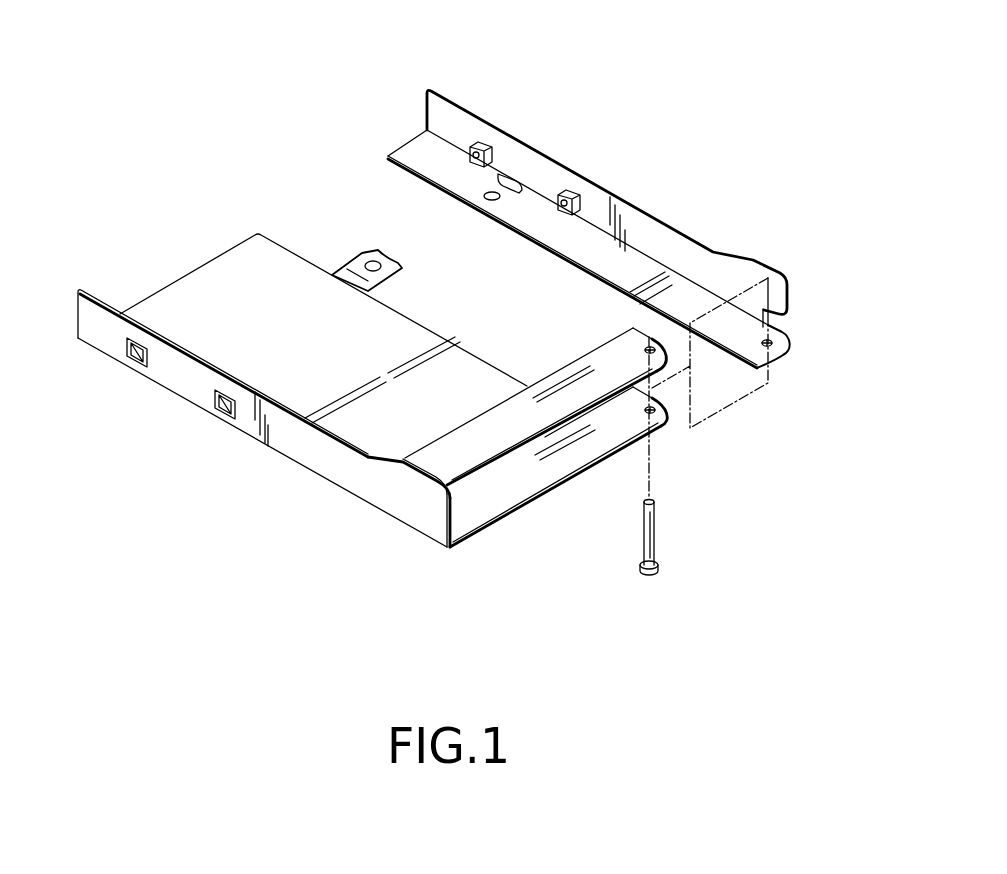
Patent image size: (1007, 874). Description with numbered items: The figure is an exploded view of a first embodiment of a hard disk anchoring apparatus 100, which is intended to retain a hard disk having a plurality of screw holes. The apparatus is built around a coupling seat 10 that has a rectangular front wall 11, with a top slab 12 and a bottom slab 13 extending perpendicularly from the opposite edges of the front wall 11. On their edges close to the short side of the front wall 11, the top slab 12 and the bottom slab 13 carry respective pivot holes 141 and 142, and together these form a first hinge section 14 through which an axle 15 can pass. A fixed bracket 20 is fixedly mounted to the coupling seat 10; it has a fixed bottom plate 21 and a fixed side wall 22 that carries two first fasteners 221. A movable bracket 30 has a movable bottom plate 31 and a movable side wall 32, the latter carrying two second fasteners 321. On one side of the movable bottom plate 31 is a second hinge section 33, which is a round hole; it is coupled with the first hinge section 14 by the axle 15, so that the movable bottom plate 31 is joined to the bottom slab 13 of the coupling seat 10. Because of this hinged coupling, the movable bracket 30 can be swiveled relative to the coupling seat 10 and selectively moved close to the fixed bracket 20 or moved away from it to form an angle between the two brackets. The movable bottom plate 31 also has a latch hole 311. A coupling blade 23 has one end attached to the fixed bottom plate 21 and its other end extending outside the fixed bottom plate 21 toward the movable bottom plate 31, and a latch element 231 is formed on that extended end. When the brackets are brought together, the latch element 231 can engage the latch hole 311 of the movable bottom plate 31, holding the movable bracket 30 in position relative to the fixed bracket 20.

The hard disk anchoring apparatus 100 is at (176, 70).
The coupling seat 10 is at (516, 535).
The front wall 11 is at (461, 484).
The top slab 12 is at (440, 461).
The bottom slab 13 is at (528, 479).
The first hinge section 14 is at (830, 427).
The pivot hole 141 is at (667, 354).
The pivot hole 142 is at (667, 416).
The axle 15 is at (652, 545).
The fixed bracket 20 is at (258, 476).
The fixed bottom plate 21 is at (204, 282).
The fixed side wall 22 is at (172, 385).
The first fasteners 221 is at (124, 360).
The coupling blade 23 is at (343, 266).
The latch element 231 is at (373, 262).
The movable bracket 30 is at (706, 208).
The movable bottom plate 31 is at (412, 147).
The latch hole 311 is at (493, 190).
The second fasteners 321 is at (481, 141).
The movable side wall 32 is at (648, 228).
The second hinge section 33 is at (770, 340).